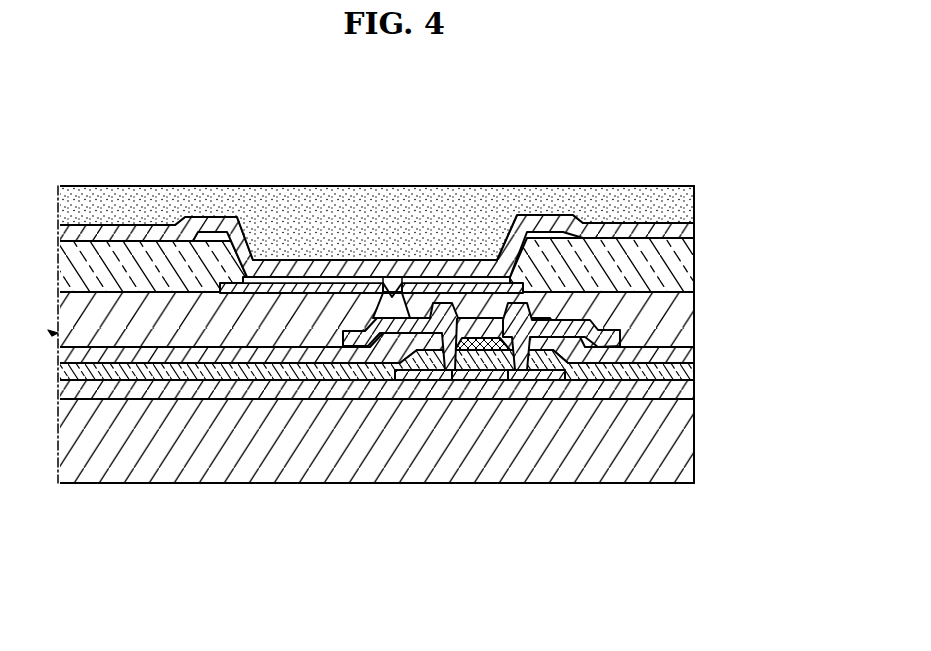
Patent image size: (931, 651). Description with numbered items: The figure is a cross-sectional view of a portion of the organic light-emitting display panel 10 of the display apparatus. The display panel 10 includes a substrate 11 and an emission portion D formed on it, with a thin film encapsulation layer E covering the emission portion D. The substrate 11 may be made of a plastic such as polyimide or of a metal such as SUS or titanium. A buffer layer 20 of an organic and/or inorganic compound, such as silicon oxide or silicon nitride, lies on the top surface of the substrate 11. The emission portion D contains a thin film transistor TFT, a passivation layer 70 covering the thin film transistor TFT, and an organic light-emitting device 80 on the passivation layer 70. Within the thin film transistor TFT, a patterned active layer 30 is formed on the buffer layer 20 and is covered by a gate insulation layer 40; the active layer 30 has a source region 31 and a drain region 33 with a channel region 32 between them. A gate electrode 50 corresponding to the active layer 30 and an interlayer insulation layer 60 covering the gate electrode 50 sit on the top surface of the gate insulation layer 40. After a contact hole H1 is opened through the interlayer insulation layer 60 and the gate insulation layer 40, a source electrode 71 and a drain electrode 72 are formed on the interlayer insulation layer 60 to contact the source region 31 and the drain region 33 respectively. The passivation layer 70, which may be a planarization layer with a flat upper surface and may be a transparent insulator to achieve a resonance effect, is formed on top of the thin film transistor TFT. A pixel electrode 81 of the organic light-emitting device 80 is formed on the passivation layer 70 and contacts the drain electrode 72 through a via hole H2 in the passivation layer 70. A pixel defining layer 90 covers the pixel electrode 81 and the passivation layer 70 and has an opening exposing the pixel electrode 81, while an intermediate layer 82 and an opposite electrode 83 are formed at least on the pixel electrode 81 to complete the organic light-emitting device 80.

The organic light-emitting display panel 10 is at (133, 104).
The substrate 11 is at (700, 446).
The buffer layer 20 is at (700, 388).
The active layer 30 is at (480, 472).
The source region 31 is at (542, 382).
The channel region 32 is at (484, 382).
The drain region 33 is at (428, 382).
The gate insulation layer 40 is at (700, 368).
The gate electrode 50 is at (484, 338).
The interlayer insulation layer 60 is at (700, 347).
The passivation layer 70 is at (700, 319).
The source electrode 71 is at (523, 304).
The drain electrode 72 is at (437, 304).
The organic light-emitting device 80 is at (412, 201).
The pixel electrode 81 is at (278, 287).
The intermediate layer 82 is at (329, 281).
The opposite electrode 83 is at (265, 143).
The pixel defining layer 90 is at (700, 258).
The thin film encapsulation layer E is at (700, 203).
The emission portion D is at (45, 227).
The contact hole H1 is at (533, 315).
The via hole H2 is at (393, 290).
The thin film transistor TFT is at (412, 347).